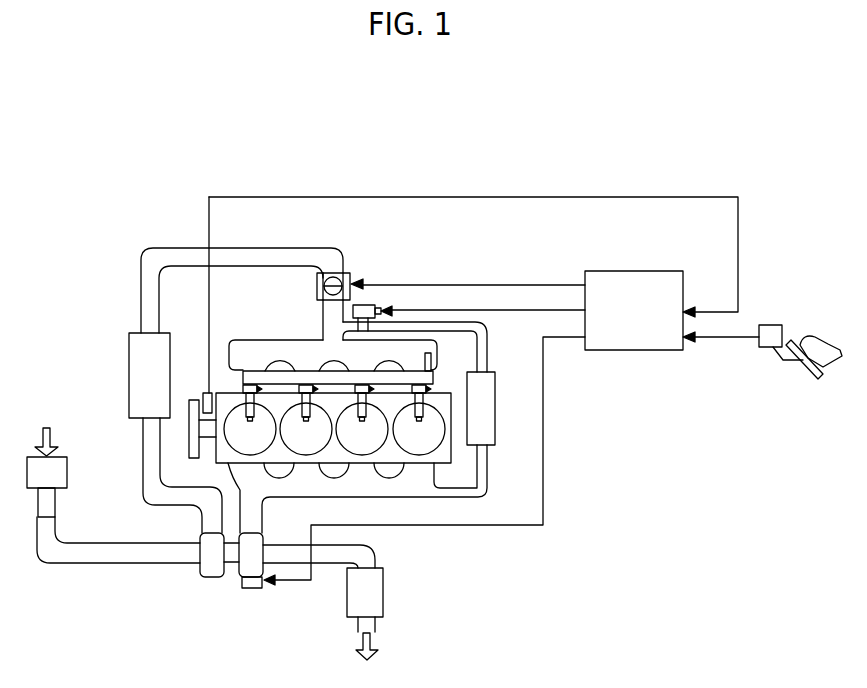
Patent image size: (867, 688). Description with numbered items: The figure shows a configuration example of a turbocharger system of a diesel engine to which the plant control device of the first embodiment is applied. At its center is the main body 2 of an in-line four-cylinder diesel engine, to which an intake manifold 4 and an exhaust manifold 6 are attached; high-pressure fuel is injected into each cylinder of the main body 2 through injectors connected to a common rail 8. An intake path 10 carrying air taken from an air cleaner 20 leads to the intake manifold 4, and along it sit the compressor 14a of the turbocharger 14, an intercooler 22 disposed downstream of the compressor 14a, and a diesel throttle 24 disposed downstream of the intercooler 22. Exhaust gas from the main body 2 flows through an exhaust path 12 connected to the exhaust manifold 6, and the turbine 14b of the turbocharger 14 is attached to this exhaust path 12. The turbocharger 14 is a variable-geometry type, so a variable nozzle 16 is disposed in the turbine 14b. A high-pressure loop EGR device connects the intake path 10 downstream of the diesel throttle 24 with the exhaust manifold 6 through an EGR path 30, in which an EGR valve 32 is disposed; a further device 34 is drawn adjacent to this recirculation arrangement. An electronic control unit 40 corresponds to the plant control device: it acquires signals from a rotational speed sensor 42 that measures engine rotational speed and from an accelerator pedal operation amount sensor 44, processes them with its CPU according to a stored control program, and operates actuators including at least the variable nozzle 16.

The main body 2 is at (218, 476).
The intake manifold 4 is at (294, 339).
The exhaust manifold 6 is at (353, 497).
The common rail 8 is at (434, 378).
The intake path 10 is at (166, 247).
The exhaust path 12 is at (378, 550).
The turbocharger 14 is at (215, 609).
The compressor 14a is at (205, 578).
The turbine 14b is at (235, 578).
The variable nozzle 16 is at (253, 589).
The air cleaner 20 is at (68, 470).
The intercooler 22 is at (129, 362).
The diesel throttle 24 is at (351, 271).
The EGR path 30 is at (489, 478).
The EGR valve 32 is at (373, 305).
The EGR valve device 34 is at (496, 396).
The electronic control unit 40 is at (634, 270).
The rotational speed sensor 42 is at (207, 393).
The accelerator pedal operation amount sensor 44 is at (771, 325).